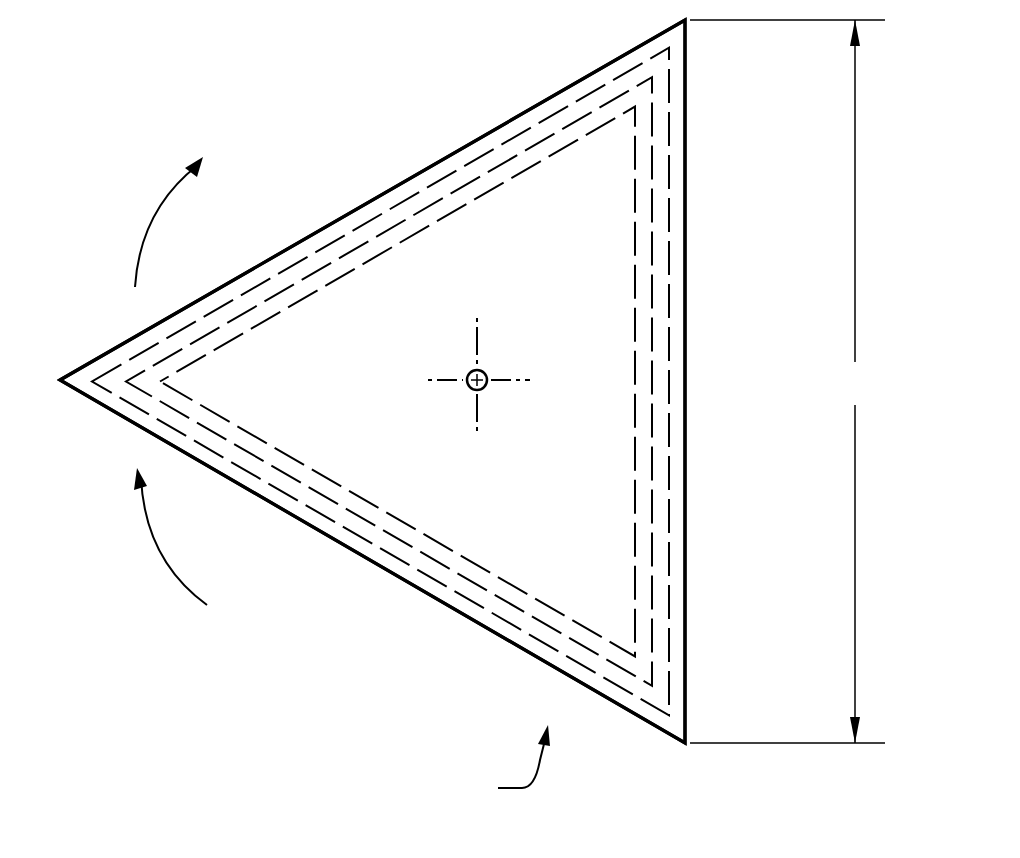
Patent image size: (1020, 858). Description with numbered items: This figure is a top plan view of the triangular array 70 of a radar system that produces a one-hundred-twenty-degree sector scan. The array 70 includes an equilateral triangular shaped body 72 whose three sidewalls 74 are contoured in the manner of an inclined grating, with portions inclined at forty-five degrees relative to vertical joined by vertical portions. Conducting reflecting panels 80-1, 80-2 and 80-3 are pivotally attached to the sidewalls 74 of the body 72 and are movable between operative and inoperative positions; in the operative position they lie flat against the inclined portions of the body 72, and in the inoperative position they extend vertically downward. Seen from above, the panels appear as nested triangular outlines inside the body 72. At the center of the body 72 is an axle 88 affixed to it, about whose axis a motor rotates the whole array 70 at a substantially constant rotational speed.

The triangular array 70 is at (396, 128).
The equilateral triangular shaped body 72 is at (480, 527).
The sidewalls 74 is at (352, 208).
The conducting reflecting panel 80-1 is at (312, 510).
The conducting reflecting panel 80-2 is at (372, 538).
The conducting reflecting panel 80-3 is at (432, 556).
The axle 88 is at (485, 372).